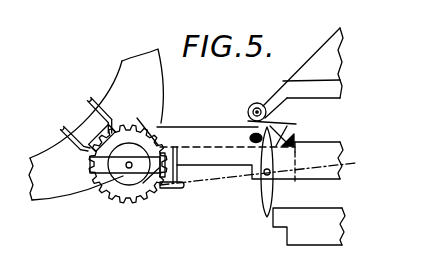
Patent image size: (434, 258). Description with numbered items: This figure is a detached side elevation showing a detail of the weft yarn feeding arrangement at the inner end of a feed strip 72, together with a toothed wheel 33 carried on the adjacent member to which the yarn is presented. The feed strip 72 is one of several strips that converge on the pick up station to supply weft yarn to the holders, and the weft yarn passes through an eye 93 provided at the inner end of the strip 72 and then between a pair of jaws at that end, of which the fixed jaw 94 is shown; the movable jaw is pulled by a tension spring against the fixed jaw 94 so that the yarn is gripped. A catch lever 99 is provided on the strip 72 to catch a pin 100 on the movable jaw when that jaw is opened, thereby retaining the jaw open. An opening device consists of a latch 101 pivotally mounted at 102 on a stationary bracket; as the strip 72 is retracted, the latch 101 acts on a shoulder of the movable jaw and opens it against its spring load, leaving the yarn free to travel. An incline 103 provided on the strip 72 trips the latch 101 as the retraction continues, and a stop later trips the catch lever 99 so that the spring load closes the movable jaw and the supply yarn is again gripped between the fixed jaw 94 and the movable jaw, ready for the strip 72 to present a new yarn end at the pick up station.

The ratchet wheel 33 is at (116, 203).
The feed strip 72 is at (333, 223).
The eye 93 is at (166, 188).
The fixed jaw 94 is at (177, 134).
The catch lever 99 is at (268, 200).
The pin 100 is at (253, 134).
The latch 101 is at (295, 124).
The pivot 102 is at (256, 108).
The incline 103 is at (339, 143).